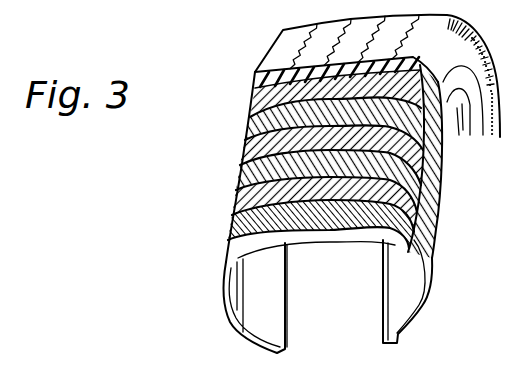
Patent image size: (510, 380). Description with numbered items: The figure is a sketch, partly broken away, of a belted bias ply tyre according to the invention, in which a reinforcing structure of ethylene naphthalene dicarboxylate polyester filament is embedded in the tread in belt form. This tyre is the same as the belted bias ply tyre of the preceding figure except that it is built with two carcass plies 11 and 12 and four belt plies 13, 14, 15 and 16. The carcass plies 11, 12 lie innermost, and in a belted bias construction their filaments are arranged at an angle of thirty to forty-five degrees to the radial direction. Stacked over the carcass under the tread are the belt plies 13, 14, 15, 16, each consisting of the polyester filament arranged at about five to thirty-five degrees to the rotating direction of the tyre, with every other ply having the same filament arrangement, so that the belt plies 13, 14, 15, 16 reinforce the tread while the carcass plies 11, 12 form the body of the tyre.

The carcass ply 11 is at (222, 258).
The carcass ply 12 is at (226, 230).
The belt ply 13 is at (234, 199).
The belt ply 14 is at (238, 167).
The belt ply 15 is at (244, 140).
The belt ply 16 is at (248, 111).